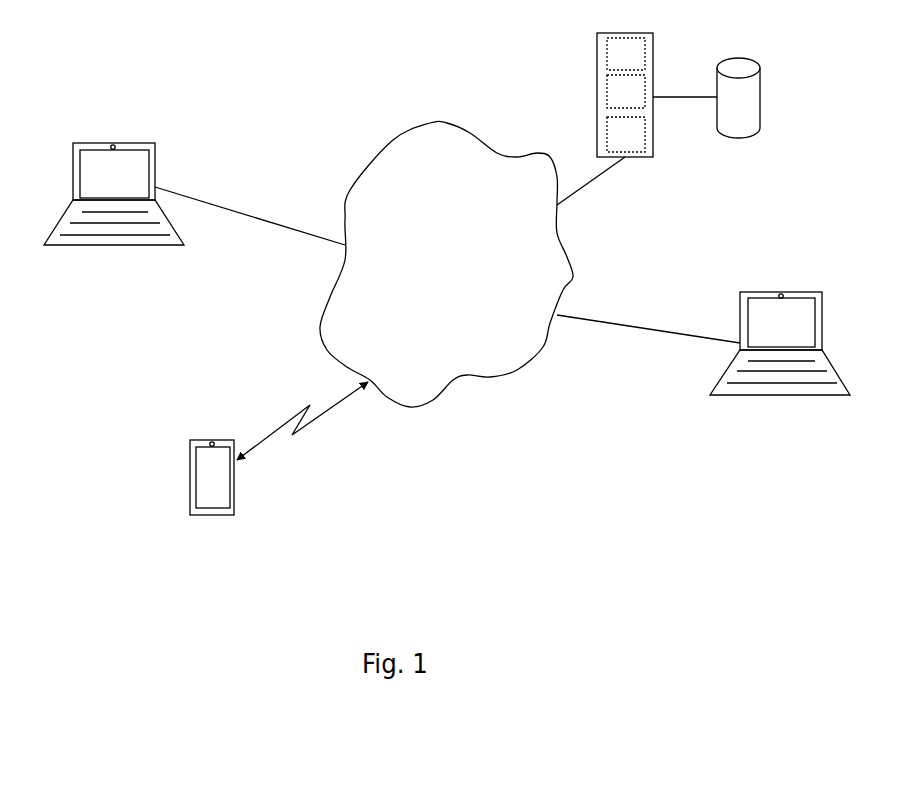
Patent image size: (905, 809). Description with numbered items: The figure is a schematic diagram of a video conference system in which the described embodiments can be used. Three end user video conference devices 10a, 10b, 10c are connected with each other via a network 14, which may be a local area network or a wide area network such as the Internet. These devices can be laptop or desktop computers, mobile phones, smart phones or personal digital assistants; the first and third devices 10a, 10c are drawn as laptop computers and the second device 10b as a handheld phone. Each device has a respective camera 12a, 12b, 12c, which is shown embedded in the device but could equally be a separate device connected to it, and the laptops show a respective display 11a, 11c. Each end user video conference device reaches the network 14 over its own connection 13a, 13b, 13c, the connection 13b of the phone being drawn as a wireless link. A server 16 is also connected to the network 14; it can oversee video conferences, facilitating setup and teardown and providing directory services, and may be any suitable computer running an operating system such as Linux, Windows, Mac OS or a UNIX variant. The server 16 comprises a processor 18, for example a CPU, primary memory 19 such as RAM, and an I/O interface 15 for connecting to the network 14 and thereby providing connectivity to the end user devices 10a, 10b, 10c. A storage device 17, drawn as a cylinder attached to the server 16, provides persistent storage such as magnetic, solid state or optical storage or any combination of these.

The end user video conference device 10a is at (70, 123).
The end user video conference device 10b is at (160, 435).
The end user video conference device 10c is at (815, 252).
The display 11a is at (142, 172).
The display 11c is at (760, 325).
The camera 12a is at (114, 145).
The camera 12b is at (213, 443).
The camera 12c is at (780, 294).
The connection 13a is at (223, 207).
The connection 13b is at (333, 407).
The connection 13c is at (635, 325).
The network 14 is at (434, 270).
The I/O interface 15 is at (614, 146).
The server 16 is at (596, 68).
The storage device 17 is at (753, 57).
The processor 18 is at (614, 102).
The primary memory 19 is at (614, 65).